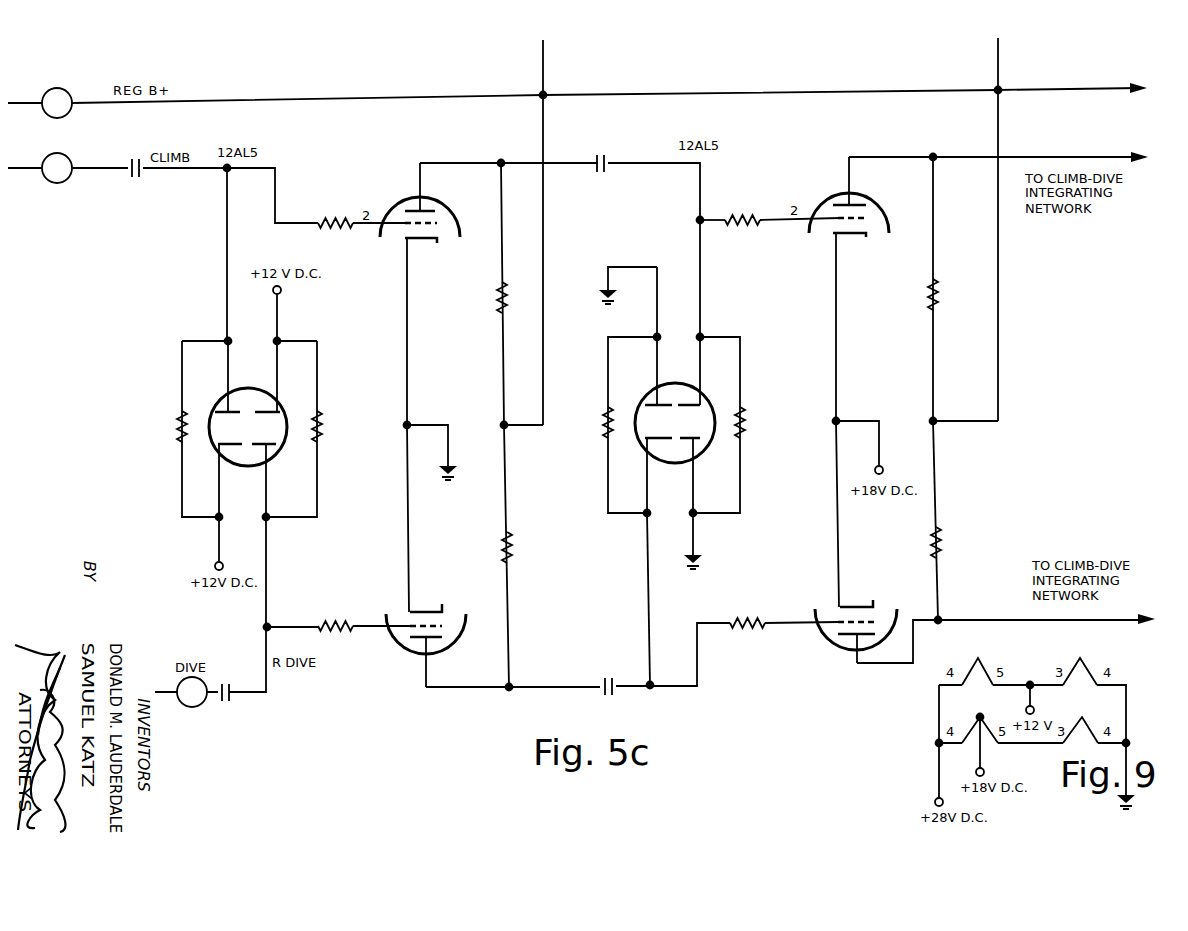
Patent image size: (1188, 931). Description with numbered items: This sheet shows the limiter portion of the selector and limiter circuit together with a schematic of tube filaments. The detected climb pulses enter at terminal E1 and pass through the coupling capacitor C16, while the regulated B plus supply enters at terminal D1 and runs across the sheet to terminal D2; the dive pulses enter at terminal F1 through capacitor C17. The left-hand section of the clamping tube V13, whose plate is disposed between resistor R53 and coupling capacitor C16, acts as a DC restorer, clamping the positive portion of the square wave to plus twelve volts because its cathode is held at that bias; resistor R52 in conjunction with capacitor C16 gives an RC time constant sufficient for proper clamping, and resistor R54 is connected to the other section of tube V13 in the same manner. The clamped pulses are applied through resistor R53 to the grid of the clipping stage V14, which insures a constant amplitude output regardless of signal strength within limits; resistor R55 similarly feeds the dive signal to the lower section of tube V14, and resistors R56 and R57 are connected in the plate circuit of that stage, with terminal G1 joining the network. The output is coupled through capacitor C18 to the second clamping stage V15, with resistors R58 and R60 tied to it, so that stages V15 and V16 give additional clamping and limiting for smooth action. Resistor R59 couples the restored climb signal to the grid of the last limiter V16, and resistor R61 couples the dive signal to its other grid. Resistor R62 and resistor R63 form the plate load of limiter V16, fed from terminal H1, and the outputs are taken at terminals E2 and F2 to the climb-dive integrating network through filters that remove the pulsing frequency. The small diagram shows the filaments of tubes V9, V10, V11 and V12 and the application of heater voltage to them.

In FIG. 5C, the terminal D1 (REG B+ input) D1 is at (38, 102).
In FIG. 5C, the terminal D2 (REG B+ output) D2 is at (1146, 105).
In FIG. 5C, the terminal E1 (climb signal input) E1 is at (38, 168).
In FIG. 5C, the terminal E2 (to climb-dive integrating network) E2 is at (1146, 145).
In FIG. 5C, the terminal F1 (dive signal input) F1 is at (183, 694).
In FIG. 5C, the terminal F2 (to climb-dive integrating network) F2 is at (1153, 631).
In FIG. 5C, the terminal G1 is at (541, 224).
In FIG. 5C, the terminal H1 is at (995, 221).
In FIG. 5C, the coupling capacitor C16 is at (138, 178).
In FIG. 5C, the coupling capacitor C17 is at (227, 703).
In FIG. 5C, the coupling capacitor C18 is at (601, 172).
In FIG. 5C, the resistor R52 is at (158, 426).
In FIG. 5C, the resistor R53 is at (331, 211).
In FIG. 5C, the resistor R54 is at (332, 426).
In FIG. 5C, the resistor R55 is at (335, 614).
In FIG. 5C, the resistor R56 is at (484, 297).
In FIG. 5C, the resistor R57 is at (525, 547).
In FIG. 5C, the resistor R58 is at (592, 422).
In FIG. 5C, the resistor R59 is at (742, 209).
In FIG. 5C, the resistor R60 is at (755, 422).
In FIG. 5C, the resistor R61 is at (747, 612).
In FIG. 5C, the resistor R62 is at (949, 294).
In FIG. 5C, the resistor R63 is at (953, 542).
In FIG. 5C, the clamping tube V13 is at (244, 429).
In FIG. 5C, the clipping stage V14 is at (418, 425).
In FIG. 5C, the clamping stage V15 is at (672, 425).
In FIG. 5C, the clipping stage V16 is at (847, 414).
In FIG. 9, the tube heater V9 is at (1080, 662).
In FIG. 9, the tube heater V10 is at (976, 663).
In FIG. 9, the tube heater V11 is at (1081, 718).
In FIG. 9, the tube heater V12 is at (980, 735).